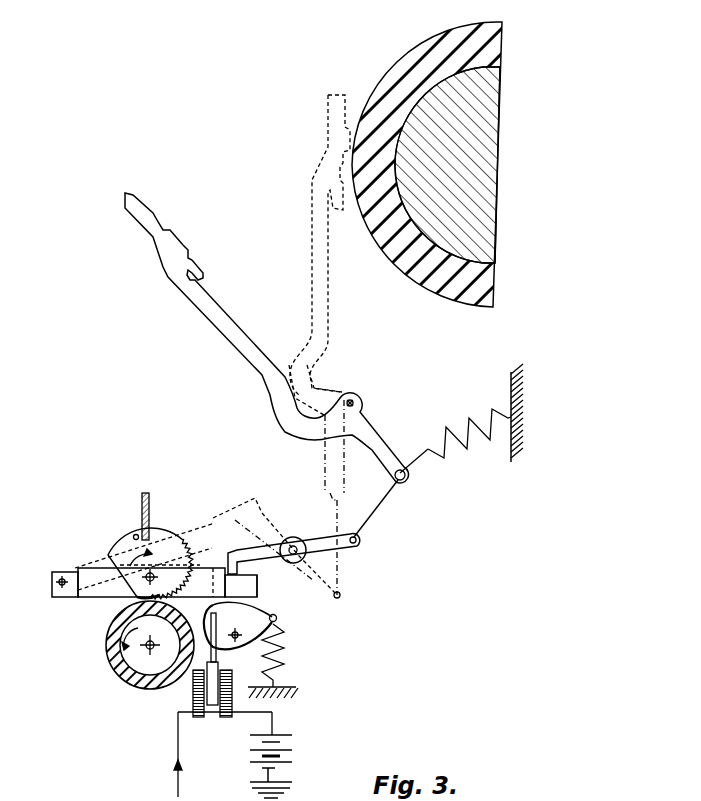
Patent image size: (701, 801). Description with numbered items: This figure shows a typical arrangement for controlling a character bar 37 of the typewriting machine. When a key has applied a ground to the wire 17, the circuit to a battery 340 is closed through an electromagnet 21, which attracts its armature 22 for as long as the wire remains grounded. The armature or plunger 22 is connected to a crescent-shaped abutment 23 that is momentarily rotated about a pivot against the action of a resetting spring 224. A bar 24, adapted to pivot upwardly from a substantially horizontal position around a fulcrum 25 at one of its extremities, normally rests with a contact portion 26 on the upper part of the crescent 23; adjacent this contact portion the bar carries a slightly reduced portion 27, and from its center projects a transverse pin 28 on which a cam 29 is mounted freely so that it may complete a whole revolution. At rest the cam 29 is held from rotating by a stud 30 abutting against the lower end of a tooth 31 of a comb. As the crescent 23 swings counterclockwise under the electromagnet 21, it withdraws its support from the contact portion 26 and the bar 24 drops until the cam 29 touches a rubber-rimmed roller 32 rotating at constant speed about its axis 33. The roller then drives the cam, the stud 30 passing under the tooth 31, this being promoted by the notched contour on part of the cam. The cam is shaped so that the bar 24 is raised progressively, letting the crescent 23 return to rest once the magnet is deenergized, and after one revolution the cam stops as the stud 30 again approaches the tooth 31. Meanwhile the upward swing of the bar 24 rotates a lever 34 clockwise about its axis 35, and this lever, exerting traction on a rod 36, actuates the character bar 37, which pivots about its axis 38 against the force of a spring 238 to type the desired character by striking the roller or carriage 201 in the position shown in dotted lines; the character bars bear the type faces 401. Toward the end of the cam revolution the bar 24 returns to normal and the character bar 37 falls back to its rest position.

The roller 201 is at (506, 144).
The type faces 401 is at (65, 444).
The character bar 37 is at (227, 332).
The axis 38 is at (358, 400).
The spring 238 is at (461, 426).
The rod 36 is at (372, 515).
The lever 34 is at (260, 558).
The axis 35 is at (297, 553).
The bar 24 is at (118, 593).
The fulcrum 25 is at (62, 578).
The contact portion 26 is at (226, 595).
The reduced portion 27 is at (252, 588).
The stud 30 is at (134, 532).
The cam 29 is at (154, 550).
The transverse pin 28 is at (154, 574).
The tooth 31 is at (151, 500).
The rubber-rimmed roller 32 is at (118, 674).
The axis 33 is at (148, 652).
The crescent-shaped abutment 23 is at (224, 632).
The resetting spring 224 is at (281, 654).
The armature 22 is at (192, 697).
The electromagnet 21 is at (223, 713).
The wire 17 is at (182, 760).
The battery 340 is at (293, 758).